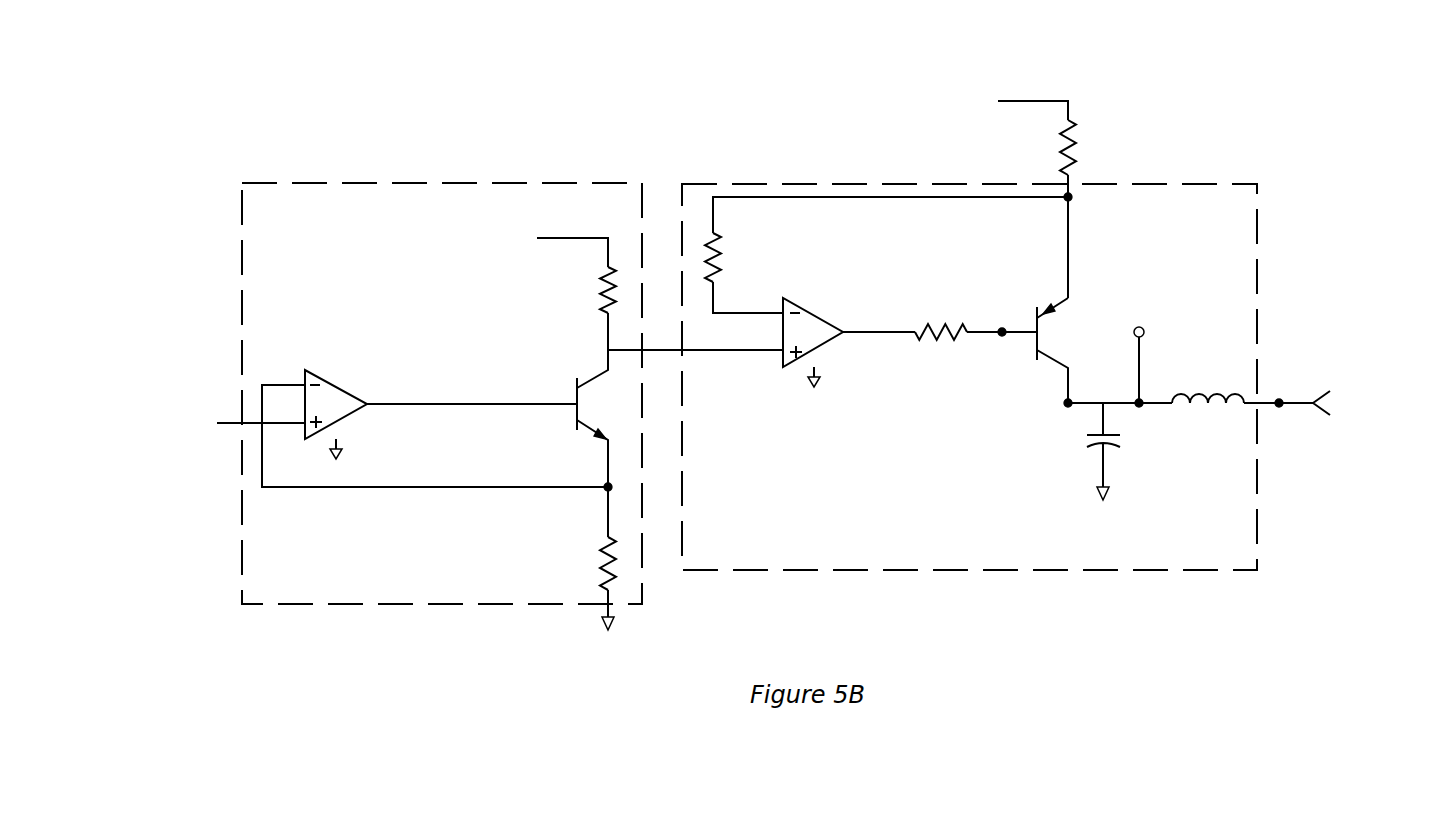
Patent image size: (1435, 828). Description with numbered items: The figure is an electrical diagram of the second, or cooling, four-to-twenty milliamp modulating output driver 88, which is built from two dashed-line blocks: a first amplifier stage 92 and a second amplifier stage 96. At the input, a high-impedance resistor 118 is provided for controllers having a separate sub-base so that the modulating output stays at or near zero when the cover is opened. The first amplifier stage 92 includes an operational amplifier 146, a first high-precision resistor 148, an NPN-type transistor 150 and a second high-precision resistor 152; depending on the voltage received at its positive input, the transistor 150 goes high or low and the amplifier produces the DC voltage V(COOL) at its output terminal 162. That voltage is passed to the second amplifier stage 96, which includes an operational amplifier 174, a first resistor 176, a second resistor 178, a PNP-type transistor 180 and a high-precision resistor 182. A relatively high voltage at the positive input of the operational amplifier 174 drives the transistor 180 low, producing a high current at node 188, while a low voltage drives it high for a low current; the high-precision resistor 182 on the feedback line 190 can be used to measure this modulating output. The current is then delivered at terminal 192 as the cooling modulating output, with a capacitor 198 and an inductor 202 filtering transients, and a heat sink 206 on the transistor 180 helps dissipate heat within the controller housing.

The second modulating output driver 88 is at (640, 88).
The first amplifier stage 92 is at (468, 183).
The second amplifier stage 96 is at (757, 183).
The high-impedance resistor 118 is at (230, 423).
The operational amplifier 146 is at (328, 383).
The first high-precision resistor 148 is at (602, 318).
The NPN-type transistor 150 is at (573, 412).
The second high-precision resistor 152 is at (603, 545).
The output terminal 162 is at (367, 407).
The operational amplifier 174 is at (820, 318).
The first resistor 176 is at (722, 273).
The second resistor 178 is at (955, 325).
The PNP-type transistor 180 is at (1033, 345).
The high-precision resistor 182 is at (1062, 150).
The node 188 is at (1063, 406).
The feedback line 190 is at (890, 197).
The terminal 192 is at (1322, 398).
The capacitor 198 is at (1095, 448).
The inductor 202 is at (1237, 395).
The heat sink 206 is at (1142, 358).